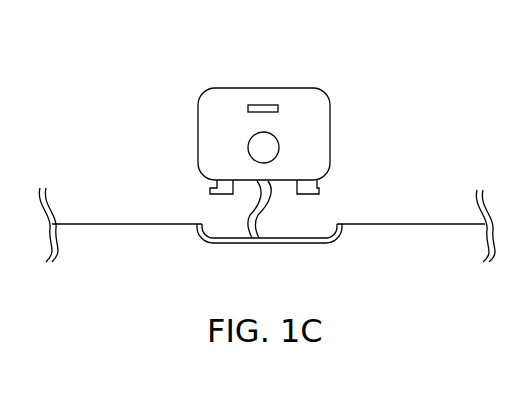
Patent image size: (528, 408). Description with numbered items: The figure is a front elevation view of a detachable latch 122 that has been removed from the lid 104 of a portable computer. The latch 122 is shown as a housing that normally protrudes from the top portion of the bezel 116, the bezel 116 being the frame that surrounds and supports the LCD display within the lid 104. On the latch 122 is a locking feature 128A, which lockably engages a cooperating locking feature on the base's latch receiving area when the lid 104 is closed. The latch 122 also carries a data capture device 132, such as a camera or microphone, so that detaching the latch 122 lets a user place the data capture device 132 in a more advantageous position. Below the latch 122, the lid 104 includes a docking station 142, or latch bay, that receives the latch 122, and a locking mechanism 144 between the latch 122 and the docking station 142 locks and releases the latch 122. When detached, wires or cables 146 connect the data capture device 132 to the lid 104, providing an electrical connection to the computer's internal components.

The lid 104 is at (82, 224).
The bezel 116 is at (407, 237).
The latch 122 is at (330, 118).
The locking feature 128A is at (253, 105).
The data capture device 132 is at (279, 151).
The locking mechanism 144 is at (210, 188).
The docking station 142 is at (226, 240).
The wires or cables 146 is at (261, 216).